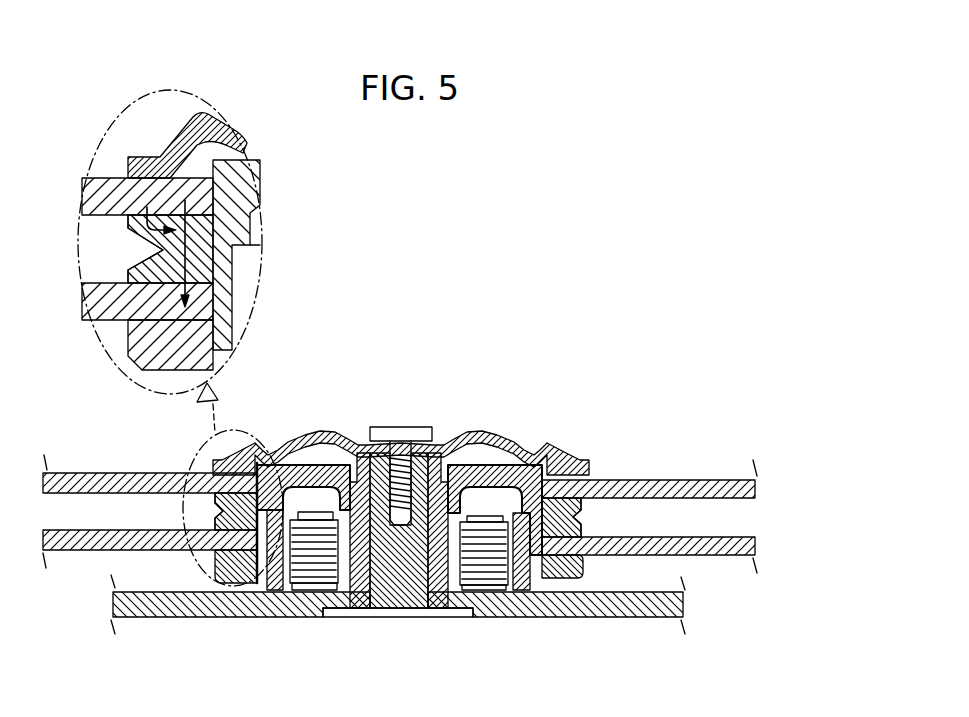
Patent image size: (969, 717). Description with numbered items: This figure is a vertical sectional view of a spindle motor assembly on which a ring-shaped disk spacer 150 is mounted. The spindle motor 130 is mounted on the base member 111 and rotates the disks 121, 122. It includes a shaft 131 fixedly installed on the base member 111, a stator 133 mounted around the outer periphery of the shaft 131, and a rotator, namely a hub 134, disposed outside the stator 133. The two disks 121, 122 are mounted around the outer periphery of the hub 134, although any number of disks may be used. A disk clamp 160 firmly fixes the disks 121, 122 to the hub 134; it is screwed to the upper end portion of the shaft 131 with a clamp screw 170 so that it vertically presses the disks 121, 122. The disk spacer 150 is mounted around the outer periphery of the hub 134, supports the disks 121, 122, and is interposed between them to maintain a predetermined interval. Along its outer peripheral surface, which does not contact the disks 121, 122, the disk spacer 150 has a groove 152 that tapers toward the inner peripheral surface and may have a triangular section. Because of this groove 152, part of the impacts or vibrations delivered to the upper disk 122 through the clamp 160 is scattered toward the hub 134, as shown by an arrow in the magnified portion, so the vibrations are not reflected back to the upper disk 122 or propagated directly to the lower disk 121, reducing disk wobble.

The base member 111 is at (627, 612).
The disk 121 is at (72, 543).
The disk 122 is at (72, 480).
The spindle motor 130 is at (356, 620).
The shaft 131 is at (398, 580).
The stator 133 is at (483, 565).
The hub 134 is at (245, 555).
The disk spacer 150 is at (240, 572).
The groove 152 is at (215, 513).
The disk clamp 160 is at (493, 437).
The clamp screw 170 is at (402, 432).